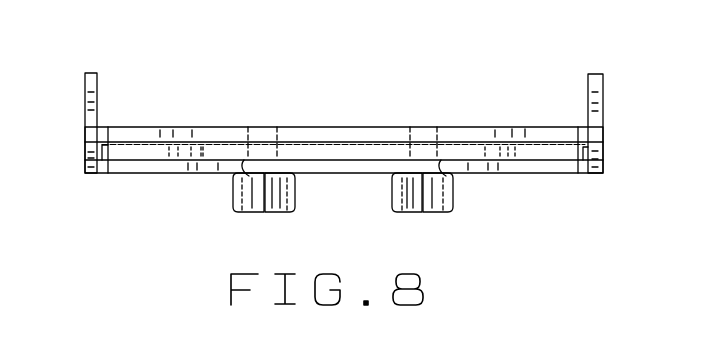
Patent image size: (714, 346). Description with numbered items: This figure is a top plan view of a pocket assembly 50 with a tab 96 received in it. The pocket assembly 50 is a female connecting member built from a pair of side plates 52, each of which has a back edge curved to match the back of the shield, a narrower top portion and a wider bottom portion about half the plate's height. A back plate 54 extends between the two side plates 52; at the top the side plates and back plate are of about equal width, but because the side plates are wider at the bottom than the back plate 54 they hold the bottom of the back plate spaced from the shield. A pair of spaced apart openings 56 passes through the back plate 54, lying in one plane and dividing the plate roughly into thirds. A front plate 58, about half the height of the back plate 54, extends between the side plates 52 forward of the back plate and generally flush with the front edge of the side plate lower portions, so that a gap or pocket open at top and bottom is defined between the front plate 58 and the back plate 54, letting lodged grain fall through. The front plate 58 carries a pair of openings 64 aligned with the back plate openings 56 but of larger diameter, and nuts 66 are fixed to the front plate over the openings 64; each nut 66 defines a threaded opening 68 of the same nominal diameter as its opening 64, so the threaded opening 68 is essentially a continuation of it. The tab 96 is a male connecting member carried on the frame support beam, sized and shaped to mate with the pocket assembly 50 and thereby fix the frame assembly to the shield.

The pocket assembly 50 is at (375, 88).
The side plate 52 is at (84, 95).
The back plate 54 is at (152, 136).
The openings 56 is at (249, 137).
The front plate 58 is at (160, 180).
The openings 64 is at (246, 178).
The nuts 66 is at (296, 192).
The threaded openings 68 is at (242, 200).
The connecting member (tab) 96 is at (310, 142).